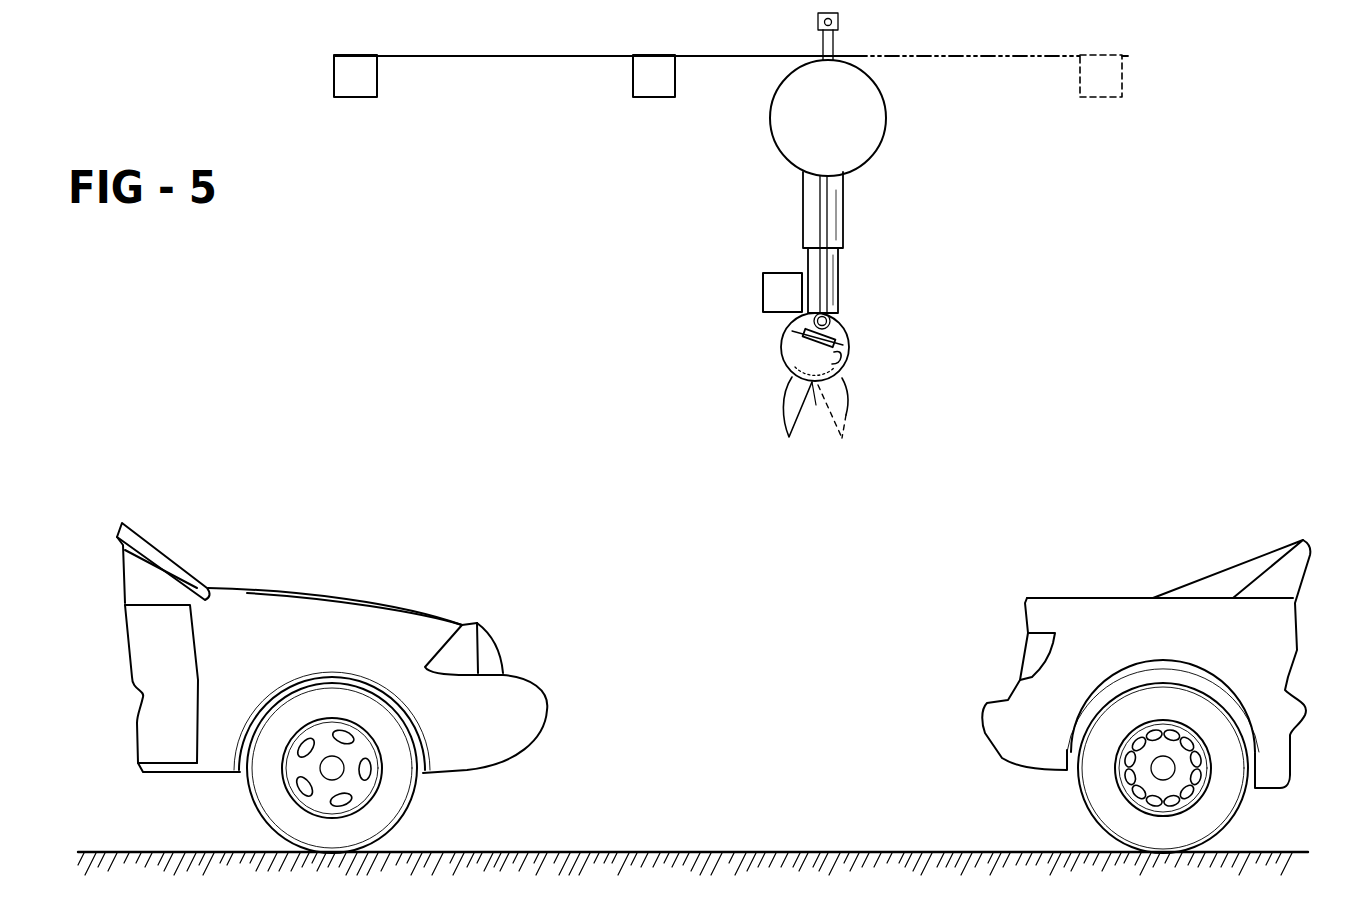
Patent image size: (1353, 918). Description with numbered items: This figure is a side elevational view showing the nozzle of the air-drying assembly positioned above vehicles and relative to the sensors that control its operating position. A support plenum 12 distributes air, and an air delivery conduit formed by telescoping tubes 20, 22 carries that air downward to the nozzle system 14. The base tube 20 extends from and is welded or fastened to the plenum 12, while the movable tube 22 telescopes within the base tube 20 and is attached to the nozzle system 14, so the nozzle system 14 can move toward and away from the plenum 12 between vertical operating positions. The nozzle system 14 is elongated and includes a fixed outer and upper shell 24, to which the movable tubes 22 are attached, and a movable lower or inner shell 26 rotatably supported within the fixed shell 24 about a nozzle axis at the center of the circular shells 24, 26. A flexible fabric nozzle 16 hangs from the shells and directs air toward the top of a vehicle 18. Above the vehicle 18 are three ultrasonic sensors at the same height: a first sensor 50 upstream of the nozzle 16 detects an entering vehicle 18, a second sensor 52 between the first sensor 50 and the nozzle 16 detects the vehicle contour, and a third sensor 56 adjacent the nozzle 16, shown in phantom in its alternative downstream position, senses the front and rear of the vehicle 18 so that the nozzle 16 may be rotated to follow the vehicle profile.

The support plenum 12 is at (877, 80).
The nozzle system 14 is at (747, 368).
The nozzle 16 is at (789, 440).
The vehicle 18 is at (1105, 598).
The base tube 20 is at (845, 212).
The movable tube 22 is at (840, 275).
The fixed outer and upper shell 24 is at (850, 328).
The movable lower or inner shell 26 is at (848, 357).
The first sensor 50 is at (354, 97).
The second sensor 52 is at (647, 97).
The third sensor 56 is at (1110, 97).